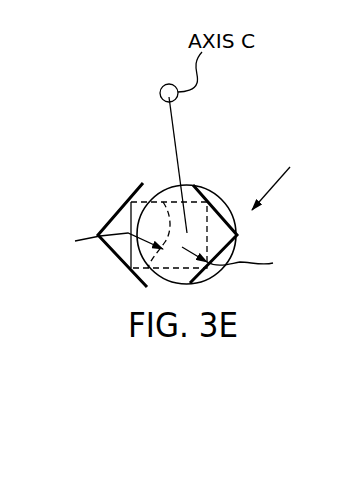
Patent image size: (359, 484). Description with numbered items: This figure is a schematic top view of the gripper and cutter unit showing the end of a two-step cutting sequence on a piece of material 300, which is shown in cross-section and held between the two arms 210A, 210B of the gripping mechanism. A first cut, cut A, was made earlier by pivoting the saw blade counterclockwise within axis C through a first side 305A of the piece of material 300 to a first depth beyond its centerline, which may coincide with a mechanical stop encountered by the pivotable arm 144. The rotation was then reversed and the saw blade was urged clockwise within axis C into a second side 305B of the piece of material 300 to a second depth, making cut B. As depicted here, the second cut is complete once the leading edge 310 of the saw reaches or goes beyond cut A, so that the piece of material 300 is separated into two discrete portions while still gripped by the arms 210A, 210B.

The pivotable arm 144 is at (172, 127).
The piece of material 300 is at (136, 203).
The leading edge 310 is at (135, 222).
The arm 210A is at (120, 210).
The arm 210B is at (227, 215).
The first side 305A is at (125, 248).
The second side 305B is at (220, 257).